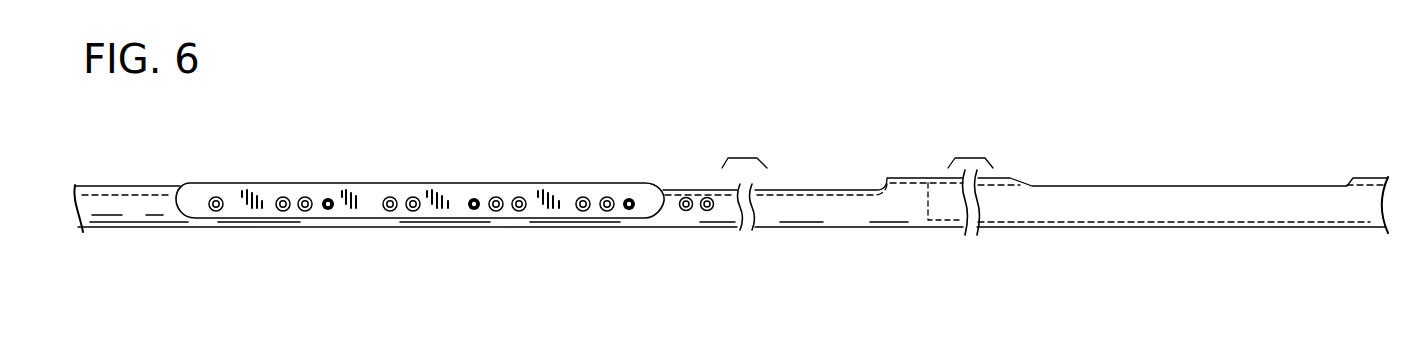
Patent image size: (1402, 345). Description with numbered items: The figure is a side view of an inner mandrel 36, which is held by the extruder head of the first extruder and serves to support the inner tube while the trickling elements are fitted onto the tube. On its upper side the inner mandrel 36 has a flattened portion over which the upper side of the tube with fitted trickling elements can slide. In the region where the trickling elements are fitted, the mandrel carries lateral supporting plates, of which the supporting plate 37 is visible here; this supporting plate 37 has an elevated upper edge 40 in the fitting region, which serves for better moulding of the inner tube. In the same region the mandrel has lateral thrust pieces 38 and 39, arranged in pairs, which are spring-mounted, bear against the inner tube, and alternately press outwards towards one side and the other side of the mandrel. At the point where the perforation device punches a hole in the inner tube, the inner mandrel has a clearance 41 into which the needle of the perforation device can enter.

The inner mandrel 36 is at (1085, 203).
The supporting plate 37 is at (358, 208).
The thrust piece 38 is at (390, 211).
The thrust piece 39 is at (413, 211).
The elevated upper edge 40 is at (557, 181).
The clearance 41 is at (1237, 187).